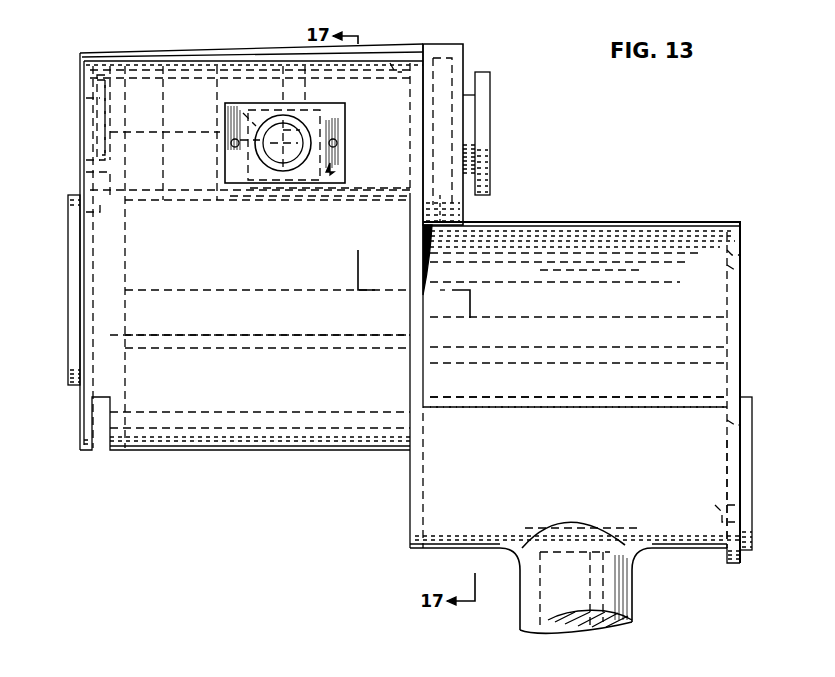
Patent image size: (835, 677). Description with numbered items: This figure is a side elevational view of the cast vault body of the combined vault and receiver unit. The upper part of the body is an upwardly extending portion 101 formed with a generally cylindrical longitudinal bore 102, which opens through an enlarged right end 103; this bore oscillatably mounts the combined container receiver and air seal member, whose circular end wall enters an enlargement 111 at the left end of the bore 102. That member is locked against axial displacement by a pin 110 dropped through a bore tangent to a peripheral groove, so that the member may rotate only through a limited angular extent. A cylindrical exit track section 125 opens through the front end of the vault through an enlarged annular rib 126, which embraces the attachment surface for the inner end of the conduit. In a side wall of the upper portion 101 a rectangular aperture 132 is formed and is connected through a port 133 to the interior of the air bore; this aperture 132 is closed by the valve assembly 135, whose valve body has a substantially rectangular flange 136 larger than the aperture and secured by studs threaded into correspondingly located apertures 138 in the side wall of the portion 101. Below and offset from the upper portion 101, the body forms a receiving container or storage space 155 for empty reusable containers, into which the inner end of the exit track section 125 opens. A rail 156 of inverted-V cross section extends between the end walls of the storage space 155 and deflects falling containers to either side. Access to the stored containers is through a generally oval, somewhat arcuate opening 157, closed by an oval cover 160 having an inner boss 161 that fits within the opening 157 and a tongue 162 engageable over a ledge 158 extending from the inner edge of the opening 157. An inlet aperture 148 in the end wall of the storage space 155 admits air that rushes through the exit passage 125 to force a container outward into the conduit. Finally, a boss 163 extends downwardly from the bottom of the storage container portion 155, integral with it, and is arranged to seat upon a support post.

The upwardly extending portion 101 is at (80, 62).
The longitudinal bore 102 is at (384, 184).
The enlarged right end 103 is at (445, 43).
The pin 110 is at (97, 110).
The enlargement 111 is at (82, 172).
The exit track section 125 is at (340, 336).
The annular rib 126 is at (66, 200).
The rectangular aperture 132 is at (305, 118).
The port 133 is at (218, 106).
The valve assembly 135 is at (330, 160).
The rectangular flange 136 is at (240, 175).
The apertures 138 is at (231, 143).
The inlet aperture 148 is at (745, 272).
The storage space 155 is at (577, 222).
The rail 156 is at (610, 408).
The opening 157 is at (754, 432).
The ledge 158 is at (748, 523).
The cover 160 is at (753, 499).
The inner boss 161 is at (727, 450).
The tongue 162 is at (722, 516).
The boss 163 is at (635, 588).